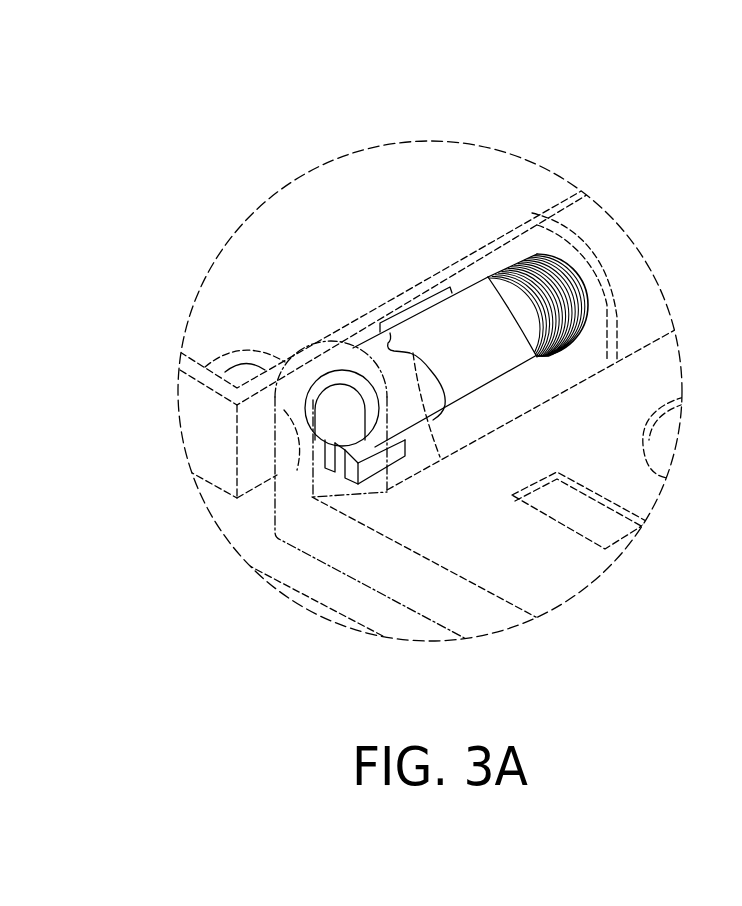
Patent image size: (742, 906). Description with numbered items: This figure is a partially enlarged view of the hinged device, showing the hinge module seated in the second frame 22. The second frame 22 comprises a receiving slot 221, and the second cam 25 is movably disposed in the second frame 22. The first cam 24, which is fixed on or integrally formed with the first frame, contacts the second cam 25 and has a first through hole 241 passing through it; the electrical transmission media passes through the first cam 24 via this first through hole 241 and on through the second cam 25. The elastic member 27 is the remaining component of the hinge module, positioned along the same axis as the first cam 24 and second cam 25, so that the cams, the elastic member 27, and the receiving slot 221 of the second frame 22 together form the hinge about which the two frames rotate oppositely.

The second frame 22 is at (208, 460).
The receiving slot 221 is at (631, 235).
The first cam 24 is at (335, 362).
The first through hole 241 is at (342, 410).
The second cam 25 is at (451, 327).
The elastic member 27 is at (563, 282).